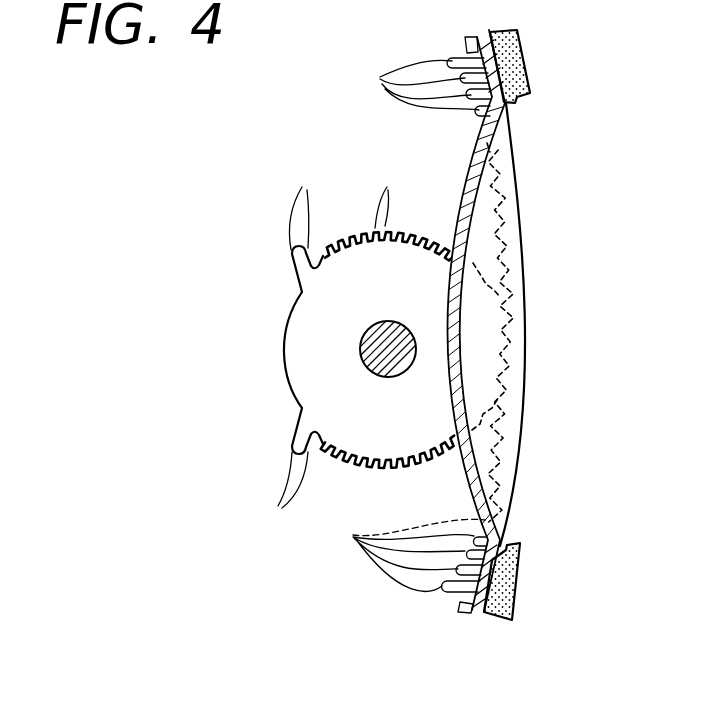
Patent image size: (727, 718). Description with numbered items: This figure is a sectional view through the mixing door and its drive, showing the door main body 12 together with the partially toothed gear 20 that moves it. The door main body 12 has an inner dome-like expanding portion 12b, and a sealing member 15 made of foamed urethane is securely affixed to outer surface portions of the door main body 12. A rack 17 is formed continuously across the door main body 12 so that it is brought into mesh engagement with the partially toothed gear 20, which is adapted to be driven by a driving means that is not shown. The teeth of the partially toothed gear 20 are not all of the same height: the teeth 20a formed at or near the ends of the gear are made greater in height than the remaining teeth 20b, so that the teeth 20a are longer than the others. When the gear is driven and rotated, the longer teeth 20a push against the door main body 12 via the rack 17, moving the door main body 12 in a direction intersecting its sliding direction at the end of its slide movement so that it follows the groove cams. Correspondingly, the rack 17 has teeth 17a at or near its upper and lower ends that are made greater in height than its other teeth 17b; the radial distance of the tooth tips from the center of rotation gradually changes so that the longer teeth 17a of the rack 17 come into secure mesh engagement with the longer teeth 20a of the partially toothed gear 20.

The door main body 12 is at (527, 245).
The expanding portion 12b is at (470, 152).
The sealing member 15 is at (523, 73).
The rack 17 is at (440, 617).
The teeth 17a is at (402, 324).
The teeth 17b is at (520, 197).
The partially toothed gear 20 is at (288, 382).
The teeth 20a is at (287, 348).
The teeth 20b is at (390, 315).